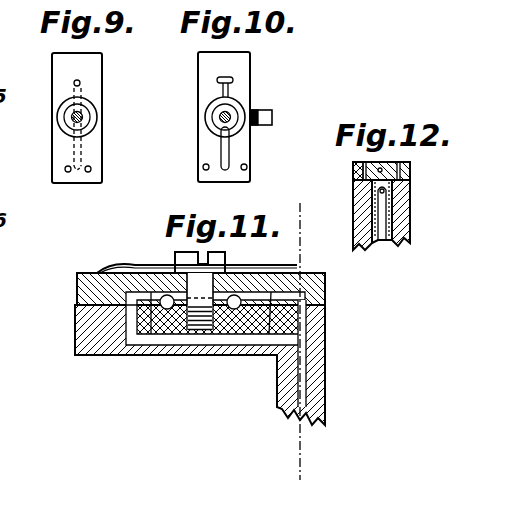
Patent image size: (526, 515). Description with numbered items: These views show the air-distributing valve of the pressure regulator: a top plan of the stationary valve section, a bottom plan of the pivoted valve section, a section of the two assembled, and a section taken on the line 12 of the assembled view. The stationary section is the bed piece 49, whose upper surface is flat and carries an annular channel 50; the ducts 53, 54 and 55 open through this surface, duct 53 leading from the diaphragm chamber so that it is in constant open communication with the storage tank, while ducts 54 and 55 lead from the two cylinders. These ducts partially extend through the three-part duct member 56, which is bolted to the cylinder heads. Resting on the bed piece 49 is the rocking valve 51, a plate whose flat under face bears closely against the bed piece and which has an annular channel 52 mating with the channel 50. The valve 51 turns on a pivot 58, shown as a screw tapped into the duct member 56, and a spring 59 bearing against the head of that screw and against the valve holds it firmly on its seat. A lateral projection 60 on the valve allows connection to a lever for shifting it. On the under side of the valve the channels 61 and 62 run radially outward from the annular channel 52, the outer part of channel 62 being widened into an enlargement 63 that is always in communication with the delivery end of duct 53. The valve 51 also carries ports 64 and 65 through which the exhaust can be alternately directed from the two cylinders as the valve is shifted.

In FIG. 11, the section line 12- 12 is at (300, 343).
In FIG. 9, the bed piece 49 is at (63, 71).
In FIG. 11, the bed piece 49 is at (93, 337).
In FIG. 9, the annular channel 50 is at (57, 124).
In FIG. 11, the annular channel 50 is at (235, 309).
In FIG. 10, the rocking valve 51 is at (238, 70).
In FIG. 11, the rocking valve 51 is at (326, 289).
In FIG. 10, the annular channel 52 is at (237, 106).
In FIG. 11, the annular channel 52 is at (240, 275).
In FIG. 9, the duct 53 is at (80, 84).
In FIG. 12, the duct 53 is at (382, 228).
In FIG. 11, the duct 53 is at (306, 359).
In FIG. 9, the duct 54 is at (67, 173).
In FIG. 12, the duct 54 is at (372, 208).
In FIG. 9, the duct 55 is at (90, 173).
In FIG. 12, the duct 55 is at (390, 205).
In FIG. 11, the three-part duct member 56 is at (320, 386).
In FIG. 9, the pivot 58 is at (82, 117).
In FIG. 10, the pivot 58 is at (230, 122).
In FIG. 11, the pivot 58 is at (182, 262).
In FIG. 11, the spring 59 is at (125, 265).
In FIG. 10, the lateral projection 60 is at (272, 119).
In FIG. 10, the channel 61 is at (228, 155).
In FIG. 11, the channel 61 is at (269, 334).
In FIG. 10, the channel 62 is at (222, 89).
In FIG. 11, the channel 62 is at (151, 334).
In FIG. 10, the enlargement 63 is at (219, 79).
In FIG. 10, the port 64 is at (245, 172).
In FIG. 12, the port 64 is at (362, 169).
In FIG. 10, the port 65 is at (202, 167).
In FIG. 12, the port 65 is at (412, 168).